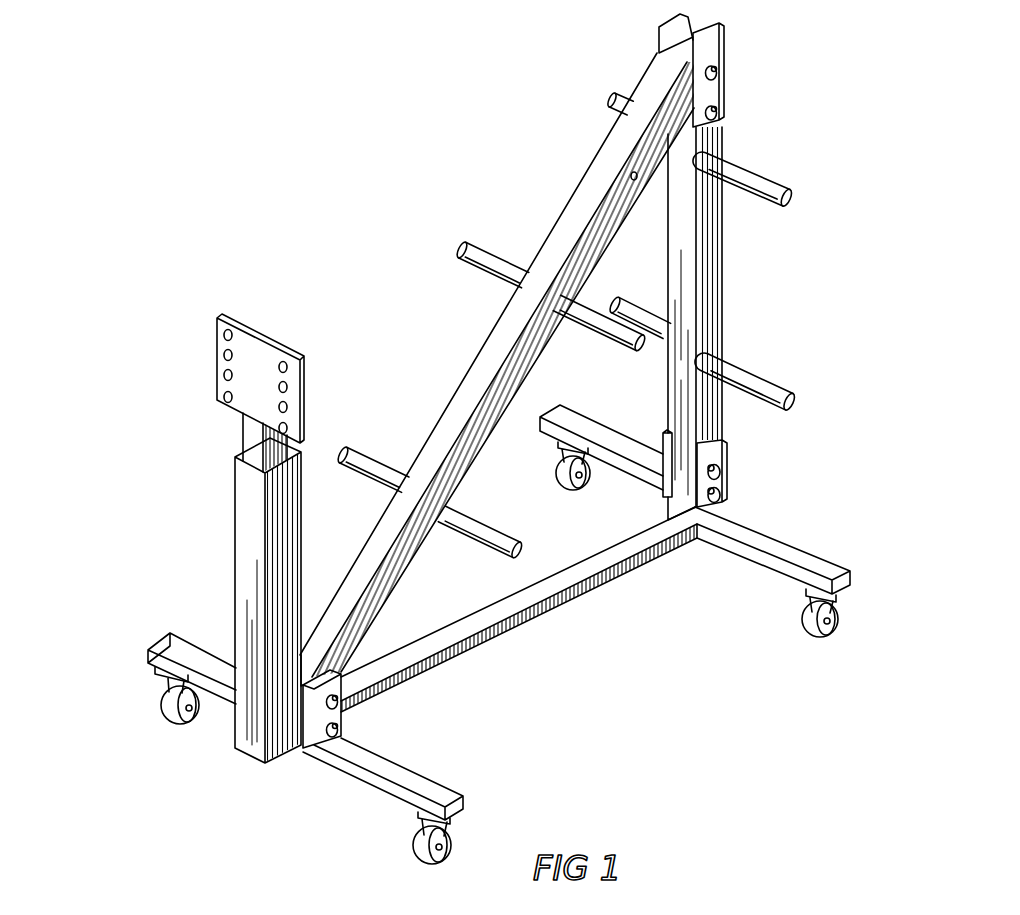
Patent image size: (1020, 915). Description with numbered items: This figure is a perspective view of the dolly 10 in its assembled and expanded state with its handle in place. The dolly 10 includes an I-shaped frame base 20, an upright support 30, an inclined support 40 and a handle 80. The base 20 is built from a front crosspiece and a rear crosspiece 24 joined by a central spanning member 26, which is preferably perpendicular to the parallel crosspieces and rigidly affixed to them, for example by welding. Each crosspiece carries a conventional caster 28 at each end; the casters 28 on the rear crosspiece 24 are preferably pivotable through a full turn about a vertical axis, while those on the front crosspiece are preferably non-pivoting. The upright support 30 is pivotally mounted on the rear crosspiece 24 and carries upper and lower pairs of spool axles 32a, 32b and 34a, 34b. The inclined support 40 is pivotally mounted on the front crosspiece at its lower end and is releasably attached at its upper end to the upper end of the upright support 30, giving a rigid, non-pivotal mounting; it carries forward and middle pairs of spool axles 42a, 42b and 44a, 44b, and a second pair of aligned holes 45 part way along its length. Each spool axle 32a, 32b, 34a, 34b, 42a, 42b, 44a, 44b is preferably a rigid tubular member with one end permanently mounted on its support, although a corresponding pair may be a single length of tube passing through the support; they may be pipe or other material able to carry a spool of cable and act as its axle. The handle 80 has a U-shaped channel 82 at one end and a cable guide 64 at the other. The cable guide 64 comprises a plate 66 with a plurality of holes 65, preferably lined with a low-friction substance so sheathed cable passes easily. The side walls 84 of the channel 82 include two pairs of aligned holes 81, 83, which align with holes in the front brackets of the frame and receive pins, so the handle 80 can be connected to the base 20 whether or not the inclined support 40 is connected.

The dolly 10 is at (468, 439).
The I-shaped frame base 20 is at (455, 634).
The rear crosspiece 24 is at (786, 542).
The central spanning member 26 is at (620, 572).
The caster 28 is at (168, 700).
The upright support 30 is at (691, 267).
The spool axle 32a is at (760, 173).
The spool axle 32b is at (612, 96).
The spool axle 34a is at (780, 383).
The spool axle 34b is at (616, 300).
The inclined support 40 is at (497, 365).
The spool axle 42a is at (486, 520).
The spool axle 42b is at (349, 450).
The spool axle 44a is at (594, 340).
The spool axle 44b is at (462, 245).
The second pair of aligned holes 45 is at (630, 170).
The cable guide 64 is at (215, 355).
The holes 65 is at (228, 376).
The plate 66 is at (215, 369).
The handle 80 is at (290, 551).
The aligned holes 81 is at (348, 713).
The U-shaped channel 82 is at (348, 753).
The aligned holes 83 is at (345, 750).
The side walls 84 is at (320, 668).